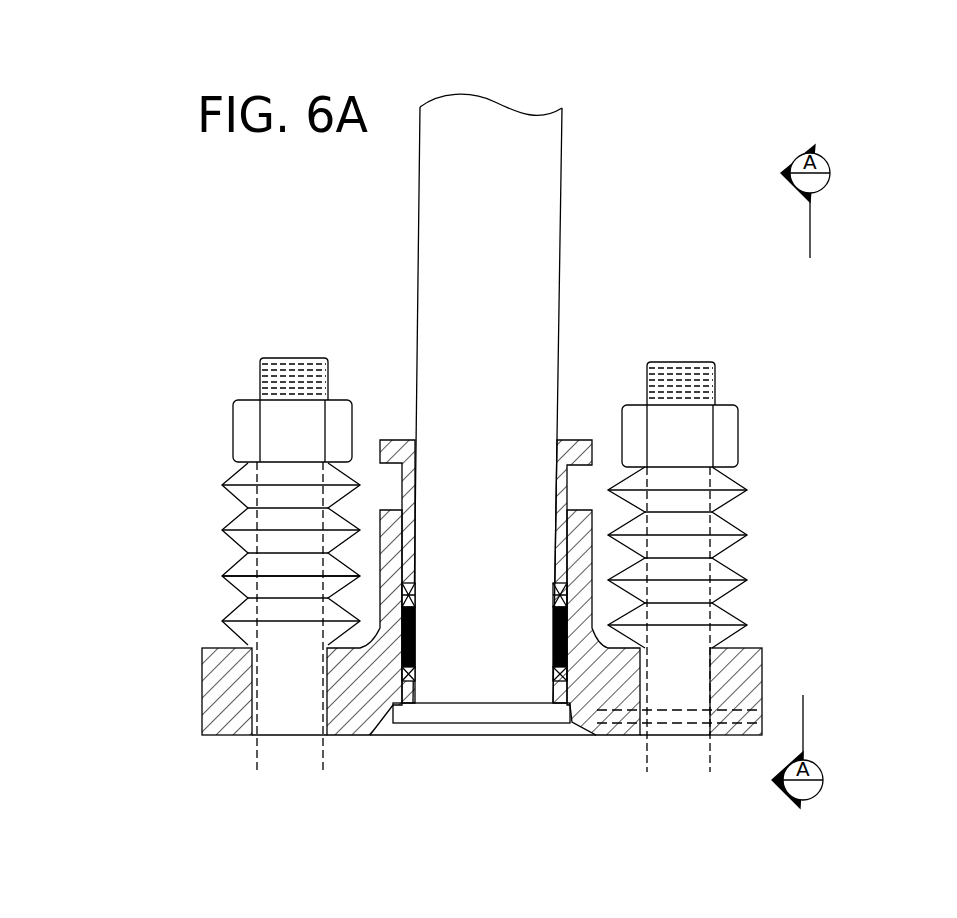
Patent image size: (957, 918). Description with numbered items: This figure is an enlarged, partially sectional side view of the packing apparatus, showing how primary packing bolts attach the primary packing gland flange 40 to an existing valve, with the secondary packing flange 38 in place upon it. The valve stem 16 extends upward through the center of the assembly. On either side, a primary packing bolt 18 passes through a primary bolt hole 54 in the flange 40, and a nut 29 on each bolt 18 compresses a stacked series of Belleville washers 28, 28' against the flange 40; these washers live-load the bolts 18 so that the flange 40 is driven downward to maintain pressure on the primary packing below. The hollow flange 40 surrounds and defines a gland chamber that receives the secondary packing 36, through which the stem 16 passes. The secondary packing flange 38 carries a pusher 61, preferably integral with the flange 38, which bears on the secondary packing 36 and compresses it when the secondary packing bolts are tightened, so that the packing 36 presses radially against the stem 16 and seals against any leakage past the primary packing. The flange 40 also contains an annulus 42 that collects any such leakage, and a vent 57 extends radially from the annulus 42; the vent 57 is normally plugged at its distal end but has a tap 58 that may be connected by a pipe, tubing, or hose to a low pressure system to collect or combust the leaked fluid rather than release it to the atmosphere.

The valve stem 16 is at (504, 198).
The primary packing bolt 18 is at (719, 373).
The Belleville washer 28 is at (265, 503).
The Belleville washer 28' is at (240, 588).
The primary packing bolt nut 29 is at (746, 437).
The secondary packing 36 is at (416, 628).
The secondary packing flange 38 is at (585, 440).
The primary packing gland flange 40 is at (728, 750).
The annulus 42 is at (421, 728).
The primary bolt hole 54 is at (253, 735).
The vent 57 is at (766, 712).
The tap 58 is at (631, 655).
The pusher 61 is at (400, 500).